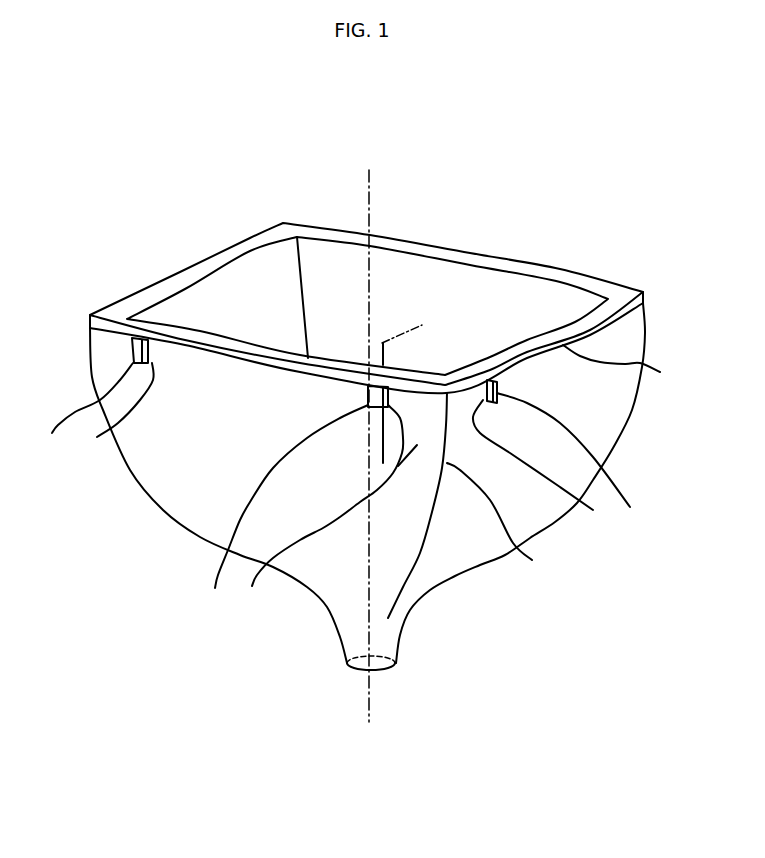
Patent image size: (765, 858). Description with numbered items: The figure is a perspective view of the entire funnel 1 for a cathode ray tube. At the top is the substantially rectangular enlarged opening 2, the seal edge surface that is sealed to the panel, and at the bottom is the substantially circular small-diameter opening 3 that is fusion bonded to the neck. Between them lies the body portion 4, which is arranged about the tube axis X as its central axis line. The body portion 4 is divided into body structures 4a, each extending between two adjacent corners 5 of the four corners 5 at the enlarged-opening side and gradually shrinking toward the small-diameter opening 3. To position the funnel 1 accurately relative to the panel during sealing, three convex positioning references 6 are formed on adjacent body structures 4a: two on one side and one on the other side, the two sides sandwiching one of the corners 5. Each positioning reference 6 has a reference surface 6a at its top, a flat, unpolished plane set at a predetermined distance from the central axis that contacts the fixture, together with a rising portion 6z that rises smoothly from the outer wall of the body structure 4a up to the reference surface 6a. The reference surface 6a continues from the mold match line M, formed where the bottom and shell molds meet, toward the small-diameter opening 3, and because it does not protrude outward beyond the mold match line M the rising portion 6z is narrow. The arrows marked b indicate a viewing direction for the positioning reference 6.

The funnel 1 is at (445, 232).
The enlarged opening 2 is at (623, 288).
The small-diameter opening 3 is at (377, 671).
The body portion 4 is at (235, 470).
The body structure 4a is at (235, 290).
The corner 5 is at (297, 268).
The positioning reference 6 is at (100, 458).
The reference surface 6a is at (341, 489).
The rising portion 6z is at (341, 489).
The mold match line M is at (622, 367).
The tube axis X is at (370, 193).
The section view direction b is at (382, 343).